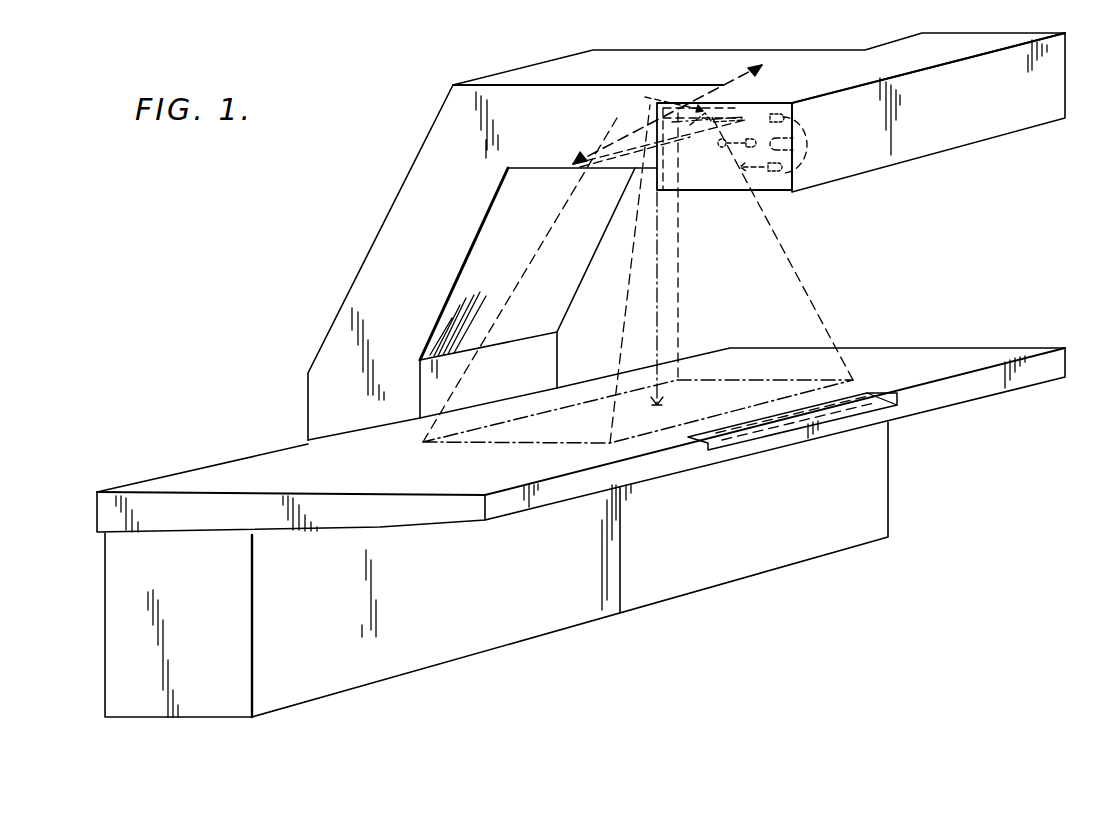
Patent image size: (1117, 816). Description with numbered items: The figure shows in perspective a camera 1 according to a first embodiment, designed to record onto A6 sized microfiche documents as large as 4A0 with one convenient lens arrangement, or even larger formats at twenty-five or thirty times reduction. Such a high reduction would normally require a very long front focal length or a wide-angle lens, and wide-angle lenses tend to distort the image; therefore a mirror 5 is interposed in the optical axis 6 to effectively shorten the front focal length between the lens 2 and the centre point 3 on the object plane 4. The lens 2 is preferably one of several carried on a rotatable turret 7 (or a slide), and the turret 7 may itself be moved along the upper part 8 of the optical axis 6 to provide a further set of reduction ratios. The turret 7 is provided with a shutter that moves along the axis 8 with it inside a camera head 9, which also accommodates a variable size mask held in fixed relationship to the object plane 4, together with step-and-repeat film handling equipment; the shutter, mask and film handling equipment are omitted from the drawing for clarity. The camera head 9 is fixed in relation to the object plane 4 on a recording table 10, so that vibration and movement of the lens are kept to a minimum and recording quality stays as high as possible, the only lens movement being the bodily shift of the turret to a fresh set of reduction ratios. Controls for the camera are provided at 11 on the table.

The camera 1 is at (416, 173).
The lens 2 is at (765, 103).
The centre point 3 is at (658, 404).
The object plane 4 is at (738, 390).
The mirror 5 is at (602, 138).
The optical axis 6 is at (660, 292).
The rotatable turret 7 is at (808, 150).
The upper part of the optical axis 8 is at (688, 160).
The camera head 9 is at (1053, 70).
The recording table 10 is at (953, 355).
The controls 11 is at (752, 440).